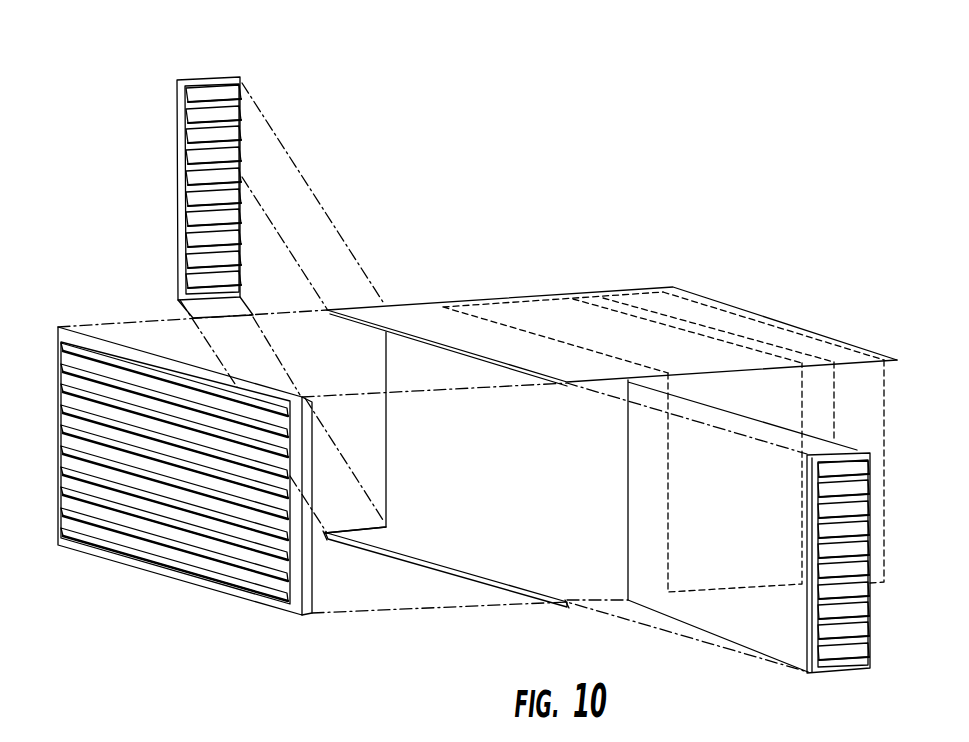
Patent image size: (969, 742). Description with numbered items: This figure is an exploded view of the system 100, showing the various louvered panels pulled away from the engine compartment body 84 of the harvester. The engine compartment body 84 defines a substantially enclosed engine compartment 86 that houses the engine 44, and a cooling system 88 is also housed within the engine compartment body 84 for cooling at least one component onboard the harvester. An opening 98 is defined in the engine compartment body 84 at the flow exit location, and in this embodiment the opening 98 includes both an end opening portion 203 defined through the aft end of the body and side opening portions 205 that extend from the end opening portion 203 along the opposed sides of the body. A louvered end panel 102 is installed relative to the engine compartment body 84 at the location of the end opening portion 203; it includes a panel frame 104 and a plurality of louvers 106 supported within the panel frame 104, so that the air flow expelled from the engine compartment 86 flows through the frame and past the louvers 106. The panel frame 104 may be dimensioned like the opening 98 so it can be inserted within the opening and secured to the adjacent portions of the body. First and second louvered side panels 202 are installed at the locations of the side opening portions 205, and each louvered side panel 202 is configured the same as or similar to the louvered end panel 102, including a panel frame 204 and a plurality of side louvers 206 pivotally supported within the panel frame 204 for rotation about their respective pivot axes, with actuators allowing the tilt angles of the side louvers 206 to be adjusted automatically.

The system 100 is at (525, 193).
The engine 44 is at (535, 308).
The engine compartment body 84 is at (437, 318).
The engine compartment 86 is at (603, 297).
The cooling system 88 is at (676, 303).
The opening 98 is at (343, 365).
The louvered end panel 102 is at (164, 434).
The panel frame 104 is at (110, 347).
The louvers 106 is at (73, 397).
The louvered side panel 202 is at (525, 368).
The end opening portion 203 is at (443, 568).
The panel frame 204 is at (183, 112).
The side opening portions 205 is at (381, 531).
The side louvers 206 is at (230, 136).